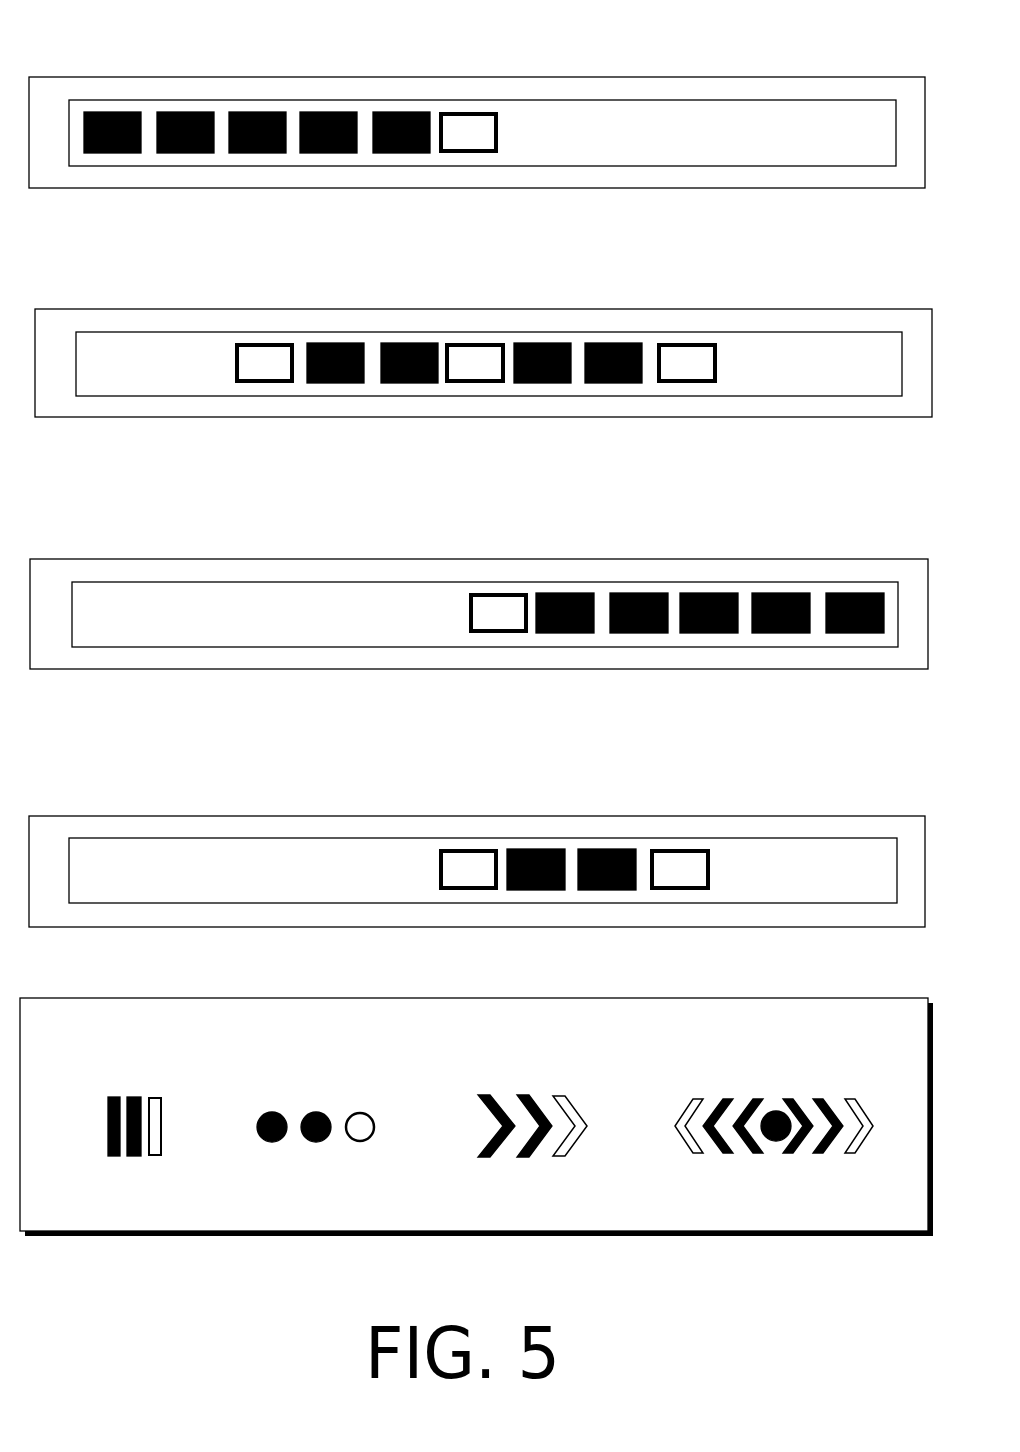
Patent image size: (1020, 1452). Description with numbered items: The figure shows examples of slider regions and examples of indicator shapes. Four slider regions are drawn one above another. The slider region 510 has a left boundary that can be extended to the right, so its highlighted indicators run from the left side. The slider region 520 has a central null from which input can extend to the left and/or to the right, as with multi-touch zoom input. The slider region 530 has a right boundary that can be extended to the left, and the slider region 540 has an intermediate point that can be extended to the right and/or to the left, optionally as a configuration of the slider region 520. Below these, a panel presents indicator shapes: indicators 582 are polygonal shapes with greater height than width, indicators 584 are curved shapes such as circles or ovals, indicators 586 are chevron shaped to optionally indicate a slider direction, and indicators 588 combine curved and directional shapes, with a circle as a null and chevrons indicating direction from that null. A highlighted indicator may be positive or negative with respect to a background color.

The slider region 510 is at (477, 95).
The slider region 520 is at (483, 326).
The slider region 530 is at (479, 576).
The slider region 540 is at (477, 835).
The indicators 582 is at (110, 1096).
The indicators 584 is at (295, 1089).
The indicators 586 is at (507, 1096).
The indicators 588 is at (760, 1094).